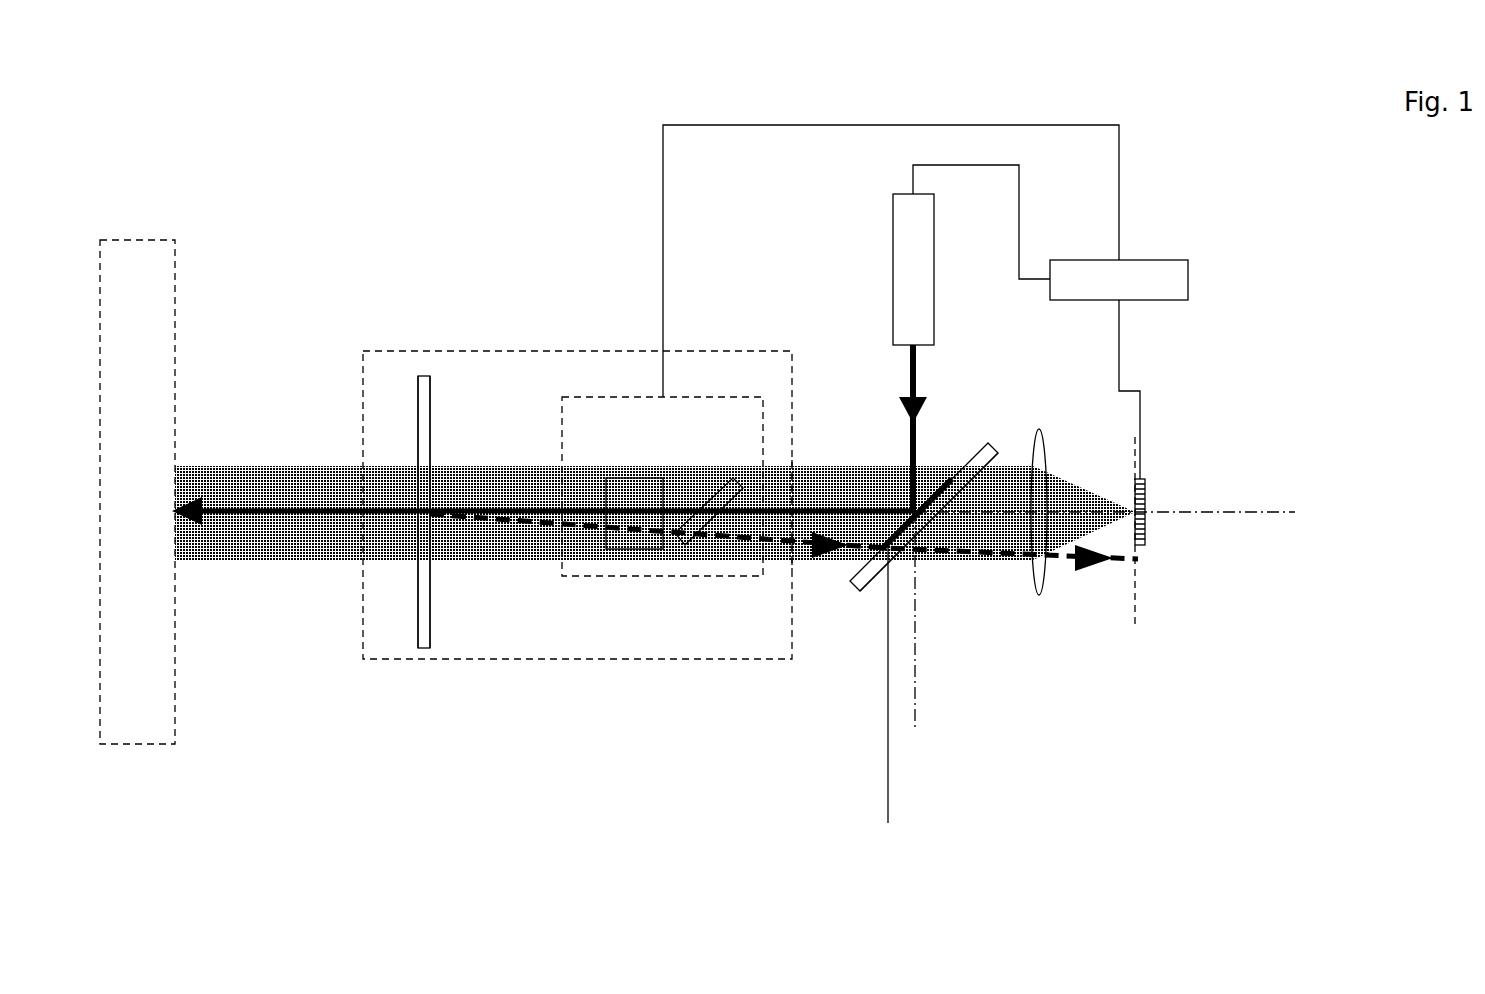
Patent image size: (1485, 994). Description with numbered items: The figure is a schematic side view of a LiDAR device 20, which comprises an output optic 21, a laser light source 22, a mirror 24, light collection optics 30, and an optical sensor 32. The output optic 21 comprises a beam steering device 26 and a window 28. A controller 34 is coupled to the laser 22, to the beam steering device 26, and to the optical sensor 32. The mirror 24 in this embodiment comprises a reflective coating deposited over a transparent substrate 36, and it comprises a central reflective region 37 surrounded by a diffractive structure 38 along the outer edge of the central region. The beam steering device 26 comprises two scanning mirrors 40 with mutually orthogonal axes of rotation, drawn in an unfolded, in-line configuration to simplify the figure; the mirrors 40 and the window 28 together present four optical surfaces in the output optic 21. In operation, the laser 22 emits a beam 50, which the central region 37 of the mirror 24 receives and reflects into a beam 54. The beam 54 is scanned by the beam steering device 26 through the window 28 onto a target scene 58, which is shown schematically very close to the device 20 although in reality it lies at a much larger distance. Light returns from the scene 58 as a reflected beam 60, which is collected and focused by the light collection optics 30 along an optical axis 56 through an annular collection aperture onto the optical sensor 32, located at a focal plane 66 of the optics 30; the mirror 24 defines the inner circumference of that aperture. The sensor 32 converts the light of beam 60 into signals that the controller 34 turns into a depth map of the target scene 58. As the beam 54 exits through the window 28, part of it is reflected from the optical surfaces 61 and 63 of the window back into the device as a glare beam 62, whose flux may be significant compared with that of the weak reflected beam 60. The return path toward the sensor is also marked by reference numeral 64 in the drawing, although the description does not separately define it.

The device 20 is at (318, 183).
The output optic 21 is at (488, 348).
The laser light source 22 is at (903, 305).
The mirror 24 is at (926, 492).
The beam steering device 26 is at (592, 577).
The window 28 is at (422, 638).
The light collection optics 30 is at (1038, 455).
The optical sensor 32 is at (1145, 535).
The controller 34 is at (1181, 292).
The transparent substrate 36 is at (863, 583).
The central reflective region 37 is at (922, 530).
The diffractive structure 38 is at (893, 688).
The scanning mirrors 40 is at (617, 530).
The beam 50 is at (910, 395).
The beam 54 is at (865, 507).
The optical axis 56 is at (1258, 513).
The target scene 58 is at (168, 670).
The reflected beam 60 is at (260, 553).
The optical surface 61 is at (418, 590).
The glare beam 62 is at (792, 540).
The optical surface 63 is at (430, 588).
The return beam 64 is at (985, 557).
The focal plane 66 is at (1137, 615).